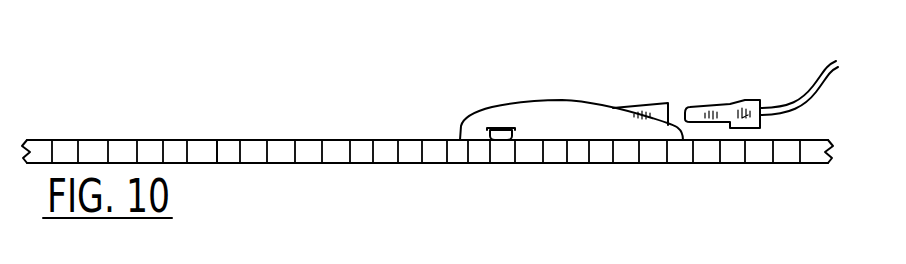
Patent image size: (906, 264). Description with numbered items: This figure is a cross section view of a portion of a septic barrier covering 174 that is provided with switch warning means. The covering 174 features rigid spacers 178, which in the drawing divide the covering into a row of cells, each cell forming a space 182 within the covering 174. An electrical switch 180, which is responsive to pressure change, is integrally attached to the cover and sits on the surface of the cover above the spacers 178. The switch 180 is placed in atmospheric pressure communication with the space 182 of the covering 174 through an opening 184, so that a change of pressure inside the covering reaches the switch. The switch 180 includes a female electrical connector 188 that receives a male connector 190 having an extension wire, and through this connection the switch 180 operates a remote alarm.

The covering 174 is at (42, 140).
The rigid spacers 178 is at (137, 152).
The space 182 is at (224, 150).
The electrical switch 180 is at (520, 118).
The opening 184 is at (502, 140).
The female electrical connector 188 is at (652, 103).
The male connector 190 is at (693, 102).